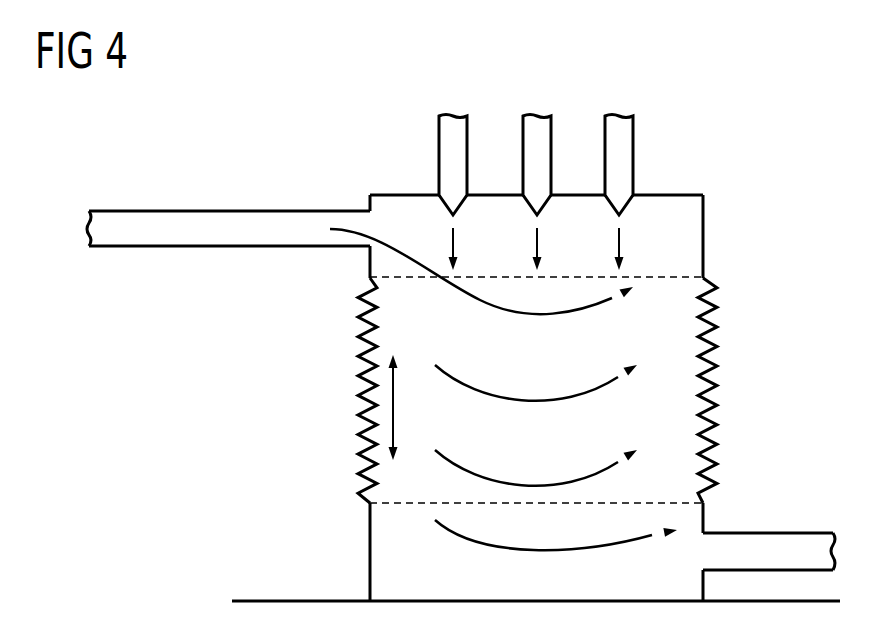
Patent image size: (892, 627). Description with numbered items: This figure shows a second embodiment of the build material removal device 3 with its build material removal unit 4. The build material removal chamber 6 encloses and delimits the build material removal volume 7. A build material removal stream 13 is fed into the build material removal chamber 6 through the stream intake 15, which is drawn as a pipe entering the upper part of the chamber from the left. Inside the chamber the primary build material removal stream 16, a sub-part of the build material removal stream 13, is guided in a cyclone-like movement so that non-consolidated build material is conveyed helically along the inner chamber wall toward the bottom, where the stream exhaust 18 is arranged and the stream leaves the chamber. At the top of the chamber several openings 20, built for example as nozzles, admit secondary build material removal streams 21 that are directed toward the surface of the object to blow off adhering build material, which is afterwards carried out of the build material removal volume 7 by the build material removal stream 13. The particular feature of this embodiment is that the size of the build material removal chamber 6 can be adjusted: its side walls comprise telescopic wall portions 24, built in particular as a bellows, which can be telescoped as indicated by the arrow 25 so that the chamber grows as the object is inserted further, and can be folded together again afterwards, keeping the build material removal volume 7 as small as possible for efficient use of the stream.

The build material removal device 3 is at (306, 101).
The build material removal unit 4 is at (380, 135).
The build material removal chamber 6 is at (684, 208).
The build material removal volume 7 is at (548, 378).
The build material removal stream 13 is at (497, 285).
The stream intake 15 is at (258, 211).
The primary build material removal stream 16 is at (603, 472).
The stream exhaust 18 is at (800, 533).
The openings 20 is at (619, 127).
The secondary build material removal streams 21 is at (620, 232).
The telescopic wall portions 24 is at (320, 370).
The arrow 25 is at (392, 425).